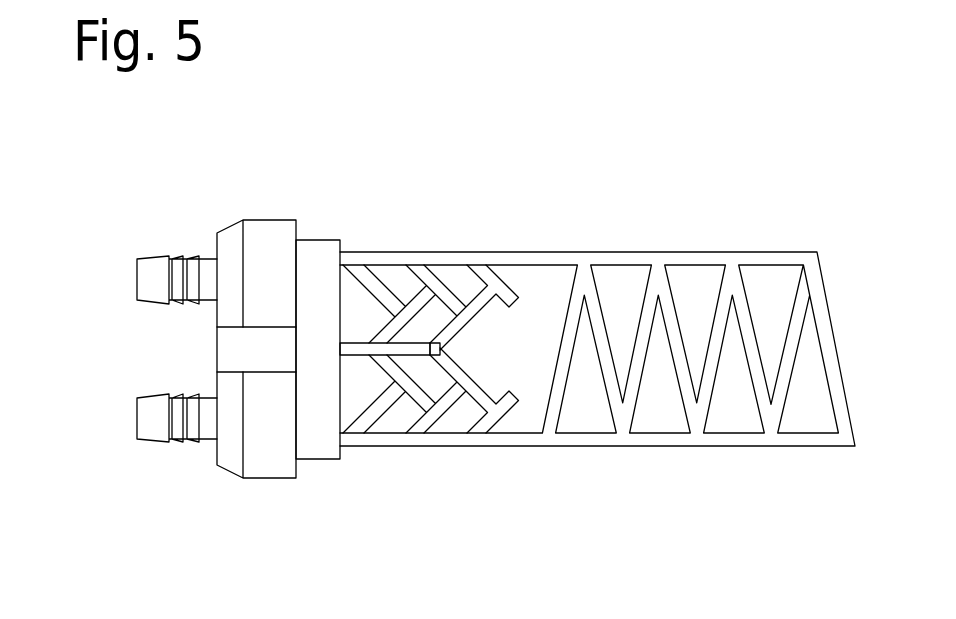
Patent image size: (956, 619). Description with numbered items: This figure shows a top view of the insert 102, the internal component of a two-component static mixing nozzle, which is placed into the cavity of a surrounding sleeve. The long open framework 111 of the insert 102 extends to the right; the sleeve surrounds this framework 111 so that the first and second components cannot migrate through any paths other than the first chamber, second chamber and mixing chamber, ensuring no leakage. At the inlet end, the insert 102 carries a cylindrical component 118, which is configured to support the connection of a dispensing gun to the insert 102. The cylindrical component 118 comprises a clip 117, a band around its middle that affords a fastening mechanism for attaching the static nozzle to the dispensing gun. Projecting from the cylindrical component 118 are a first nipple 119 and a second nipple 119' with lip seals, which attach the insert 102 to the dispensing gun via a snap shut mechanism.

The insert 102 is at (531, 120).
The framework 111 is at (742, 262).
The clip 117 is at (233, 350).
The cylindrical component 118 is at (265, 243).
The first nipple 119 is at (154, 250).
The second nipple 119' is at (147, 440).